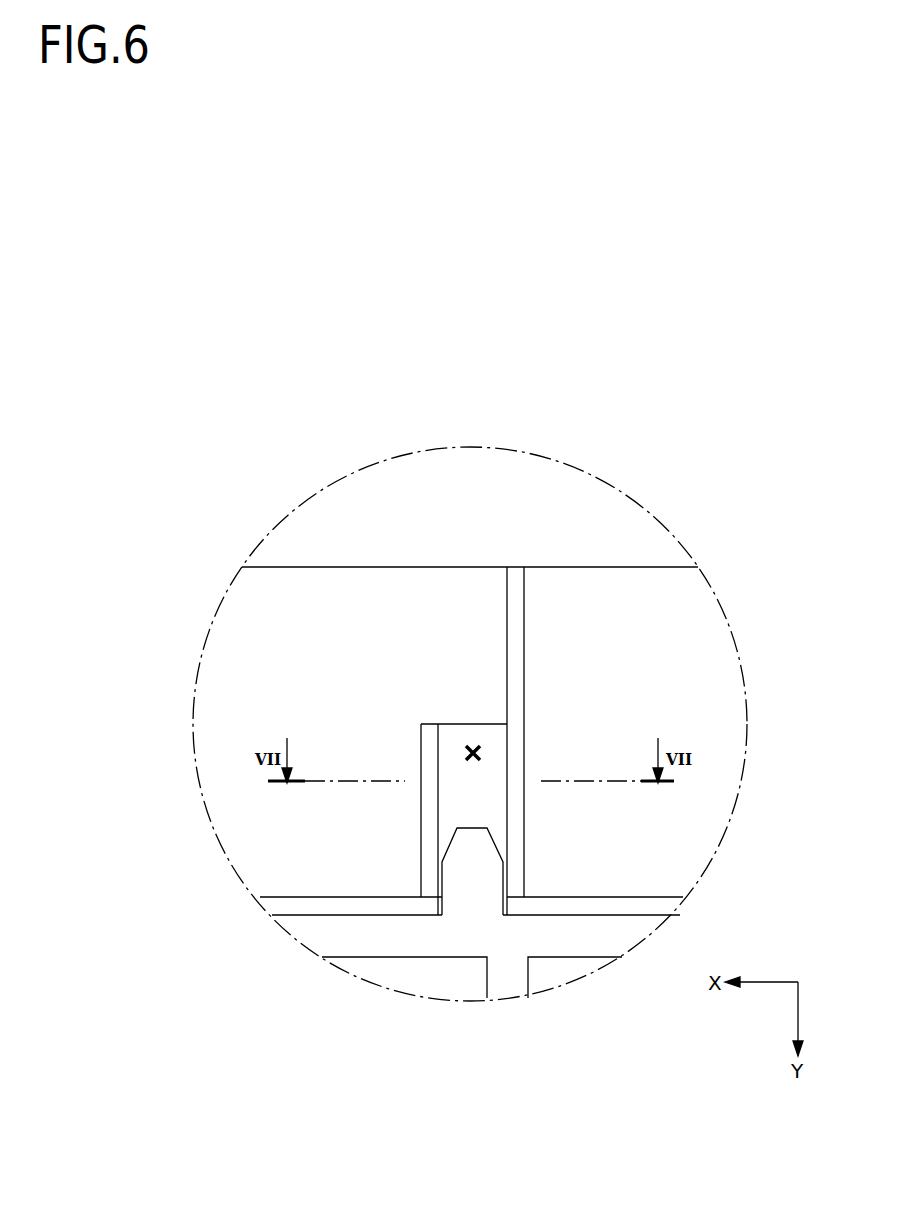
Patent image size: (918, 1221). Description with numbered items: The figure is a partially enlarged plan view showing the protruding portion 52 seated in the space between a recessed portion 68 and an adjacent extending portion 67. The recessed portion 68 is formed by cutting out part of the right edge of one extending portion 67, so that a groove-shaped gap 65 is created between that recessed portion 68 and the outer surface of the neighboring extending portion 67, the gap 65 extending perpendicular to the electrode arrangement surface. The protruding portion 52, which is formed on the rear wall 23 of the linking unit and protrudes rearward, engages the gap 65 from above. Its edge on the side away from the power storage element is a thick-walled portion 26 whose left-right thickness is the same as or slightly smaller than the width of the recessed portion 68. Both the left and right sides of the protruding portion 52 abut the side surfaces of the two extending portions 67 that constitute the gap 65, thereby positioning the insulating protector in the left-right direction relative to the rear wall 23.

The extending portion 67 is at (320, 598).
The recessed portion 68 is at (438, 753).
The gap 65 is at (472, 748).
The protruding portion 52 is at (458, 848).
The thick-walled portion 26 is at (438, 885).
The rear wall 23 is at (332, 938).